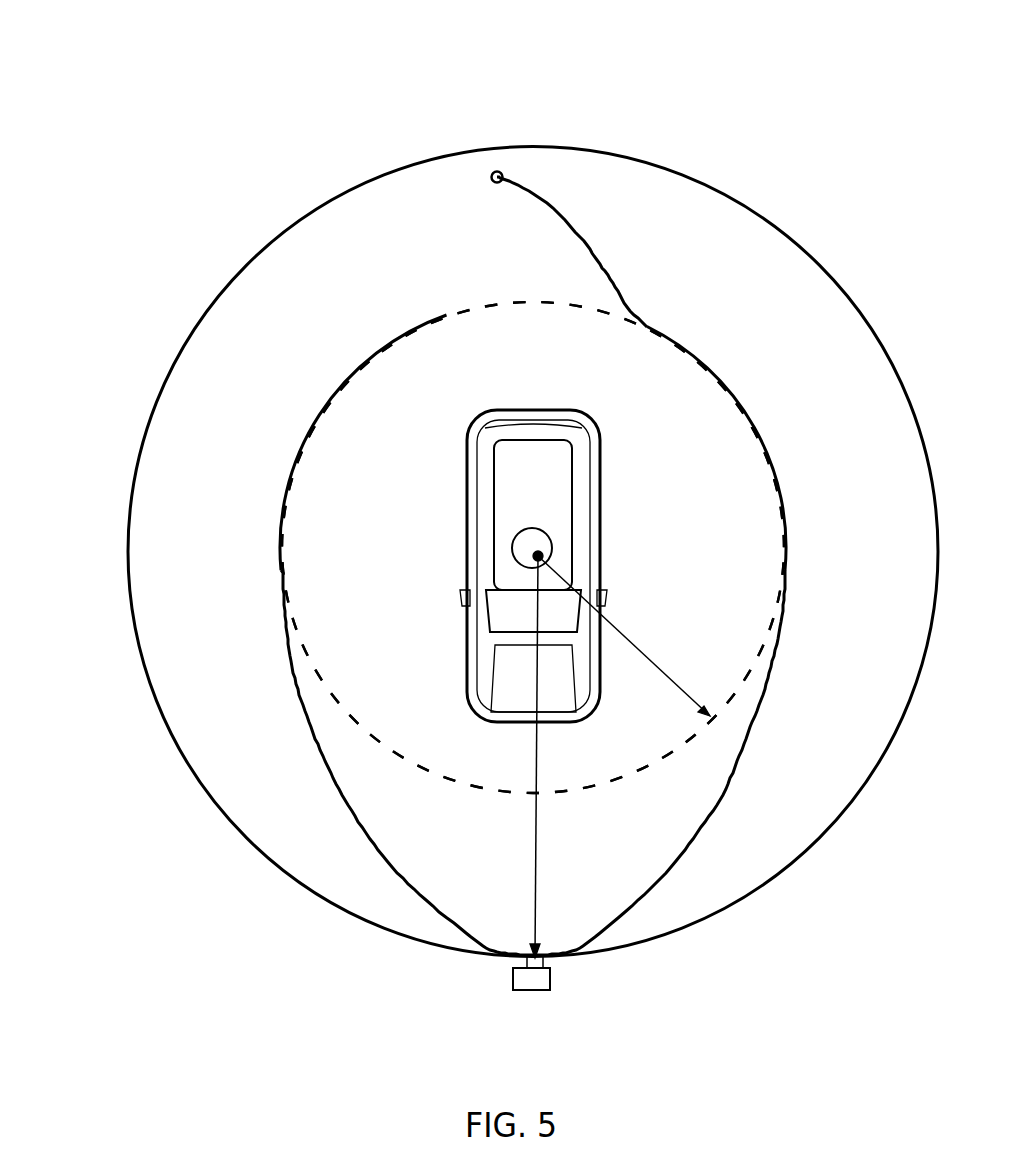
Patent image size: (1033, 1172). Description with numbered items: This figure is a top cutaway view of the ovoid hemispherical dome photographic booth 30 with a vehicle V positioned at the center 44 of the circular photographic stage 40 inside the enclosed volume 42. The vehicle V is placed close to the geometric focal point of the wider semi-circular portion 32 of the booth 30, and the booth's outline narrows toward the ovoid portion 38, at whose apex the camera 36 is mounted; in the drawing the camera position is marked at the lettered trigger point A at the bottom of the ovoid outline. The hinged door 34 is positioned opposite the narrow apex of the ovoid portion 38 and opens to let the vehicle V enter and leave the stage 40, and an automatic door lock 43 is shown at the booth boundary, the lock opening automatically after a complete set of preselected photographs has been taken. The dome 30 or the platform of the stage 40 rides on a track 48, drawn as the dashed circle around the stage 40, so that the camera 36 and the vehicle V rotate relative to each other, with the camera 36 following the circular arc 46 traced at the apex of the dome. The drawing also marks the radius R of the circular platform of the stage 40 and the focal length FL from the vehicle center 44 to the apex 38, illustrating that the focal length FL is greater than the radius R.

The ovoid hemispherical dome photographic booth 30 is at (313, 413).
The semi-circular portion 32 is at (743, 410).
The hinged door 34 is at (593, 238).
The camera 36 is at (532, 983).
The ovoid portion 38 is at (573, 958).
The photographic stage 40 is at (378, 595).
The enclosed volume 42 is at (527, 313).
The automatic door lock 43 is at (497, 171).
The center 44 is at (540, 554).
The circular arc 46 is at (306, 210).
The track 48 is at (660, 760).
The vehicle V is at (578, 500).
The radius R is at (624, 636).
The focal length FL is at (548, 757).
The camera trigger point A is at (537, 1013).